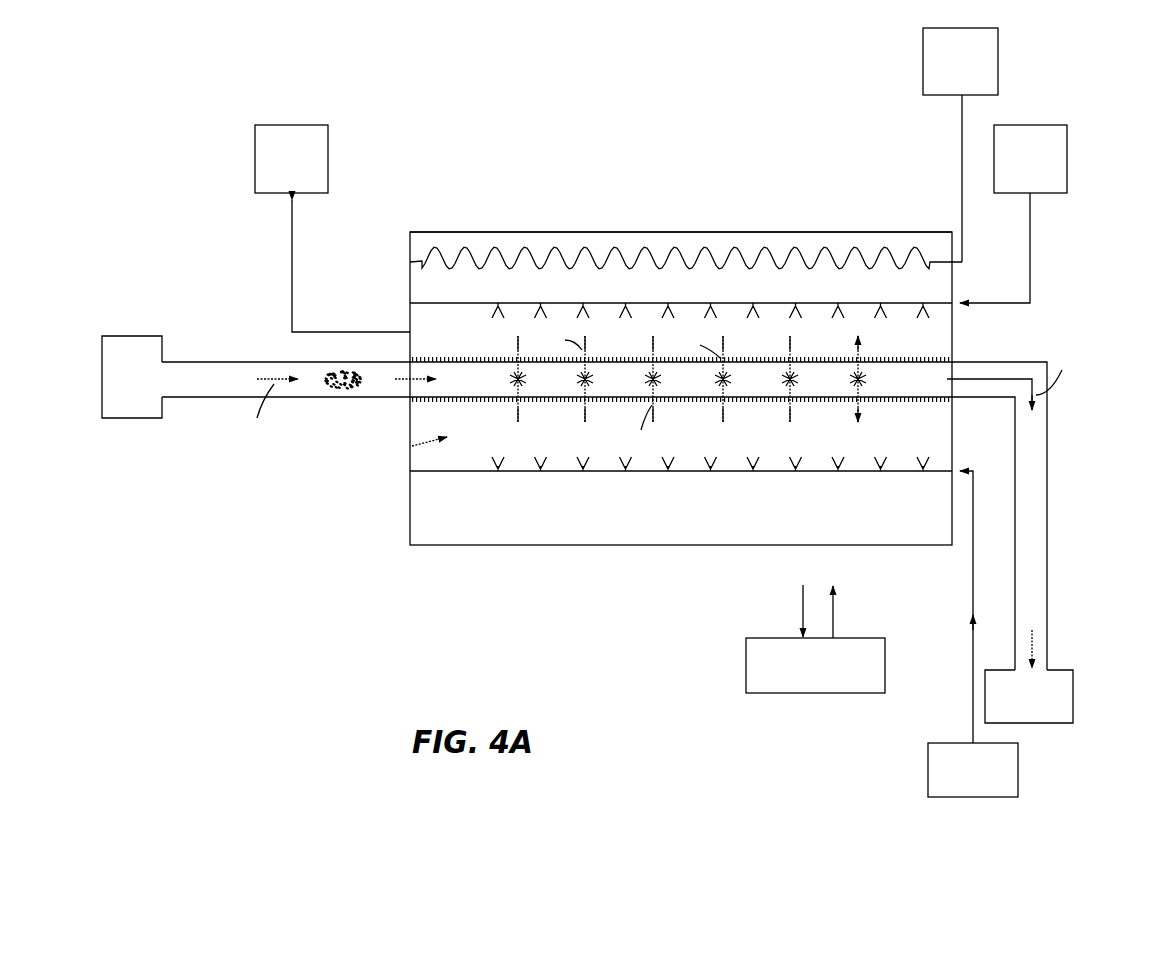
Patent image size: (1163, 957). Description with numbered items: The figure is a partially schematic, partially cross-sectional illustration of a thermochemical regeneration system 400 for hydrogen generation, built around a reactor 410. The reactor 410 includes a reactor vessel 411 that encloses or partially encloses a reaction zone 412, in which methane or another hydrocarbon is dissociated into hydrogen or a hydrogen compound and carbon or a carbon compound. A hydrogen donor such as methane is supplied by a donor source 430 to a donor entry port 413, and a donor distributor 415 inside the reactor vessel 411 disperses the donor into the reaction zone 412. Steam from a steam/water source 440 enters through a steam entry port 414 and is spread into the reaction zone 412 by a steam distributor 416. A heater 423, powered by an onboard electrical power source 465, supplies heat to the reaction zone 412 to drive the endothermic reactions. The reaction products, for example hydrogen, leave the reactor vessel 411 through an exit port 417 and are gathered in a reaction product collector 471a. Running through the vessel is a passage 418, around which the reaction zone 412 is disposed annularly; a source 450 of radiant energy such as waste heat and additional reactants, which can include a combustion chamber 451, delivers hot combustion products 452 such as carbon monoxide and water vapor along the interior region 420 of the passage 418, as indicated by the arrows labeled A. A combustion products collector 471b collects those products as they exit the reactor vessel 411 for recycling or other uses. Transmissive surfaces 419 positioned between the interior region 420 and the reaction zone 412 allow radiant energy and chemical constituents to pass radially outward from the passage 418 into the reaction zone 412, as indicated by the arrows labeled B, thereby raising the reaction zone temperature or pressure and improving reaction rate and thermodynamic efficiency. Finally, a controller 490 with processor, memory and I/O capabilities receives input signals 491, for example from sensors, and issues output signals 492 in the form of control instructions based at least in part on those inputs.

The thermochemical regeneration (TCR) system 400 is at (525, 152).
The reactor 410 is at (893, 197).
The reactor vessel 411 is at (630, 232).
The reaction zone 412 is at (480, 343).
The donor entry port 413 is at (953, 300).
The steam entry port 414 is at (955, 470).
The donor distributor 415 is at (725, 303).
The steam distributor 416 is at (457, 471).
The exit port 417 is at (405, 330).
The passage 418 is at (417, 400).
The transmissive surface 419 is at (922, 392).
The interior region 420 is at (645, 418).
The heater 423 is at (505, 240).
The donor source 430 is at (1070, 160).
The steam/water source 440 is at (925, 775).
The source of radiant energy and/or additional reactants 450 is at (131, 336).
The combustion chamber 451 is at (140, 420).
The combustion/exhaust products 452 is at (340, 390).
The onboard electrical power source 465 is at (1000, 65).
The reaction product collector 471a is at (330, 160).
The combustion products collector 471b is at (1055, 660).
The controller 490 is at (888, 668).
The input signals 491 is at (800, 628).
The output signals 492 is at (838, 620).